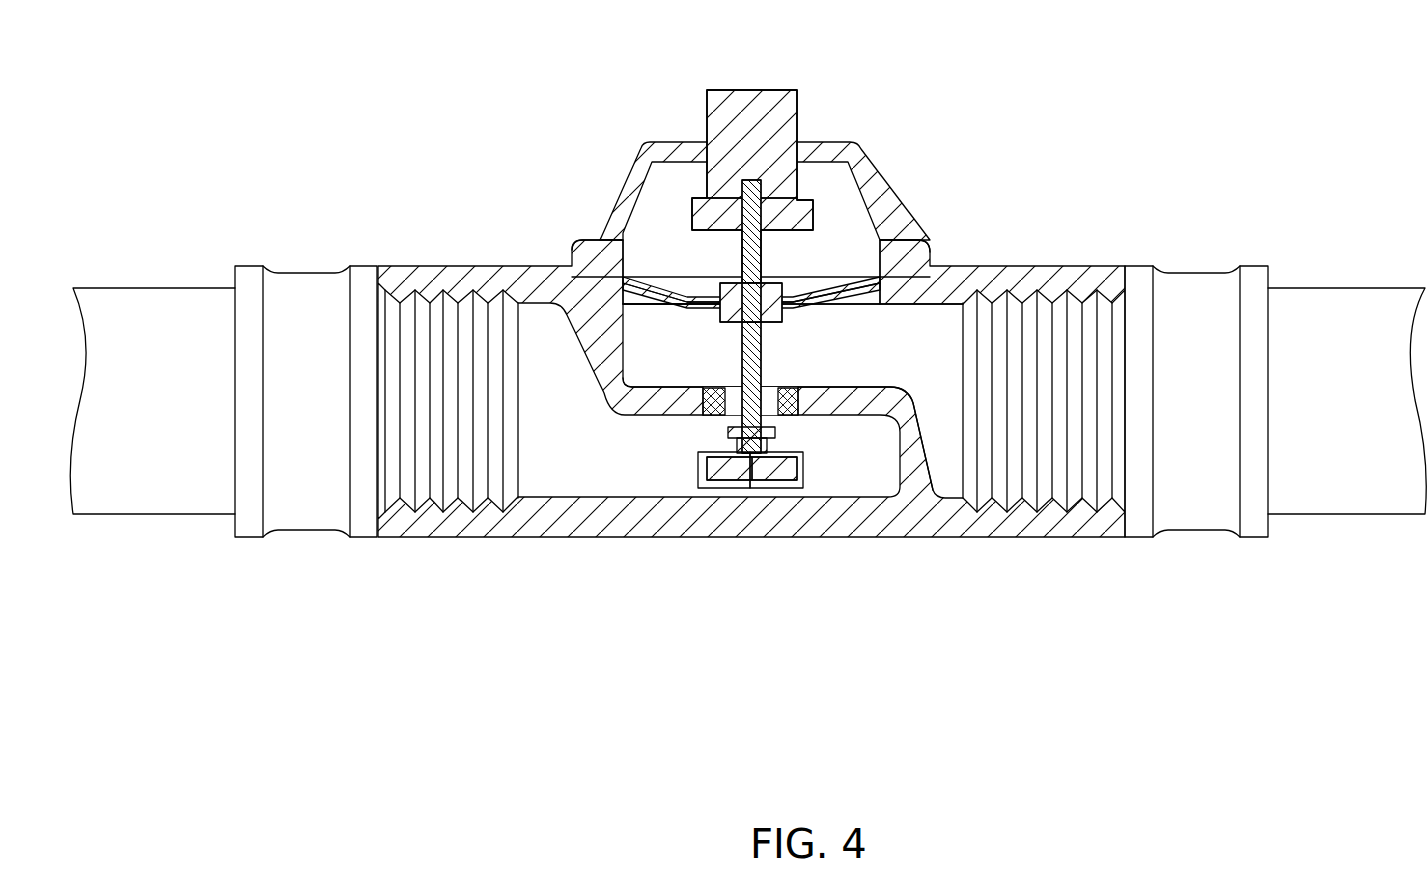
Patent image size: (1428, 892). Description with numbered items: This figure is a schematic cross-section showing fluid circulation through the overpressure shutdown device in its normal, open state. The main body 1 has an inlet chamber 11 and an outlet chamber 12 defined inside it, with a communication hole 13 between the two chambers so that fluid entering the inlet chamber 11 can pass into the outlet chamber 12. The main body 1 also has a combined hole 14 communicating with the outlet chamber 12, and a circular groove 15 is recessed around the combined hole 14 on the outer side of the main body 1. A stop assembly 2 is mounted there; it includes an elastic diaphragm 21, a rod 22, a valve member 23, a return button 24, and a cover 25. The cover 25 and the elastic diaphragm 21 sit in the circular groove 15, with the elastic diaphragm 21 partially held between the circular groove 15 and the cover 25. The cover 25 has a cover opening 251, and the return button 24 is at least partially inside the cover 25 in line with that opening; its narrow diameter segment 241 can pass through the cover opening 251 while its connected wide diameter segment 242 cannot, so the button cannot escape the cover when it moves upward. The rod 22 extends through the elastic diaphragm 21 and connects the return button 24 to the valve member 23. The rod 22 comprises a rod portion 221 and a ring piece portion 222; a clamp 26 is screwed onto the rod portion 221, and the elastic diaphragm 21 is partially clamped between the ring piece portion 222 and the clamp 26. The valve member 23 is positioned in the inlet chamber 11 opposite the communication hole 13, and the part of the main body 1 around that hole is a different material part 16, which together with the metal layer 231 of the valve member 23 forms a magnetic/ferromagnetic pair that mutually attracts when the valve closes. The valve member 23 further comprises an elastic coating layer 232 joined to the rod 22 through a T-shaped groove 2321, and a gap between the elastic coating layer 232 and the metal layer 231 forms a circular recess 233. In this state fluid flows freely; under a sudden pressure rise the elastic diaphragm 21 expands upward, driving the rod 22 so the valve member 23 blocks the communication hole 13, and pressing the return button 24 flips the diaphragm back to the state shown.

The main body 1 is at (1109, 227).
The inlet chamber 11 is at (535, 463).
The outlet chamber 12 is at (893, 345).
The communication hole 13 is at (732, 407).
The combined hole 14 is at (755, 292).
The circular groove 15 is at (570, 267).
The different material part 16 is at (783, 403).
The stop assembly 2 is at (756, 347).
The elastic diaphragm 21 is at (757, 243).
The rod 22 is at (808, 204).
The rod portion 221 is at (800, 275).
The ring piece portion 222 is at (805, 300).
The valve member 23 is at (735, 555).
The metal layer 231 is at (762, 480).
The elastic coating layer 232 is at (803, 480).
The circular recess 233 is at (730, 533).
The T-shaped groove 2321 is at (725, 485).
The return button 24 is at (677, 132).
The narrow diameter segment 241 is at (705, 99).
The wide diameter segment 242 is at (690, 207).
The cover 25 is at (823, 142).
The cover opening 251 is at (793, 160).
The clamp 26 is at (641, 262).